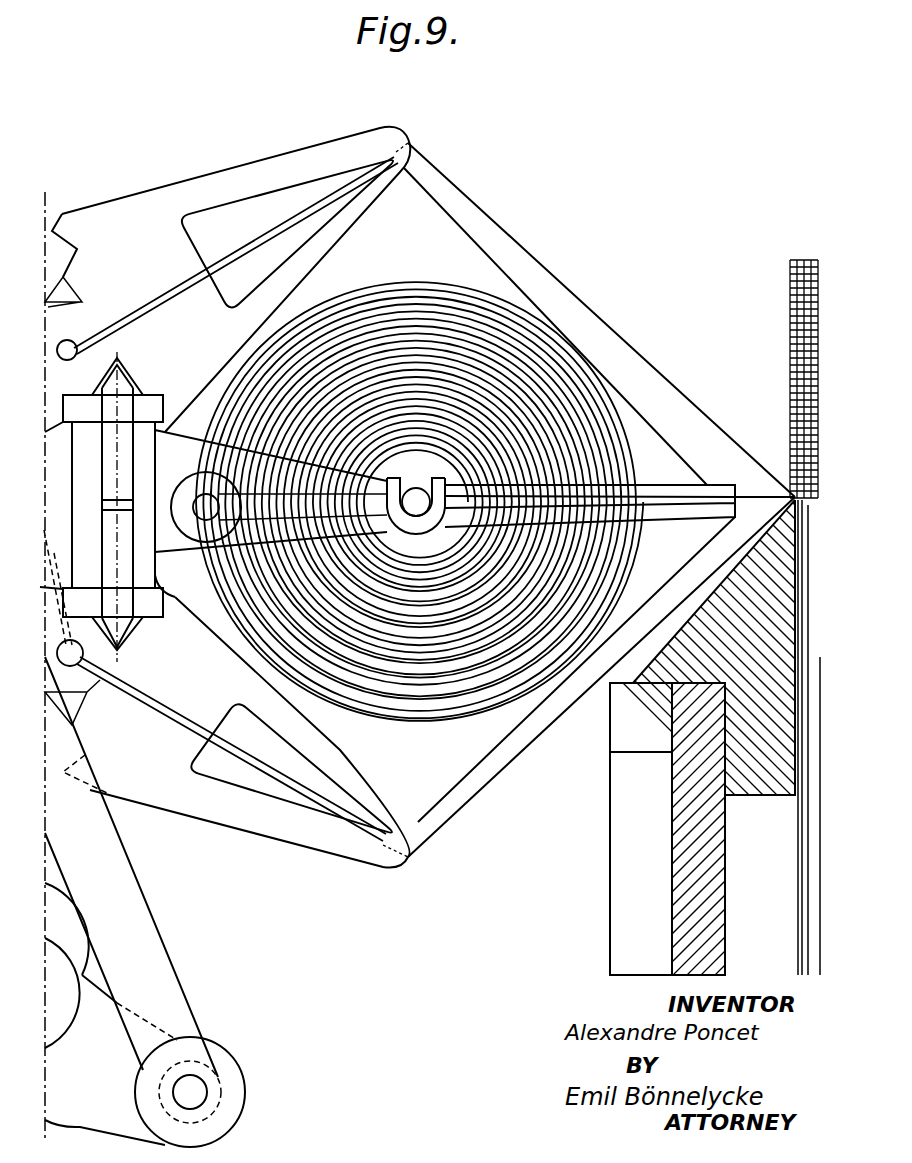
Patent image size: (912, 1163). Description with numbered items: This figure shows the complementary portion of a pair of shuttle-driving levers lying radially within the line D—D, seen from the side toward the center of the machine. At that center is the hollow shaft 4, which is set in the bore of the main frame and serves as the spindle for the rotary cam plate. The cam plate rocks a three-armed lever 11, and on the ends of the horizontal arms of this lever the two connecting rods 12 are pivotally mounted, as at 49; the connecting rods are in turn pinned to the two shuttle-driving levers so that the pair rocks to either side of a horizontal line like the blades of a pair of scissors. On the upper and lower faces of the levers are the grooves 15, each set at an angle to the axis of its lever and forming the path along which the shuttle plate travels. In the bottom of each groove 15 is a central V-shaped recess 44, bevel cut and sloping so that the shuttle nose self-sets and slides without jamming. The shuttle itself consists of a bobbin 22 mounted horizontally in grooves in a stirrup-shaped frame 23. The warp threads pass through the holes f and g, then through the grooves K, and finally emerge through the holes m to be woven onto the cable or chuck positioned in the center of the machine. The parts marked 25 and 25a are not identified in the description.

The line D— D is at (52, 662).
The upper lever arm plate 25 is at (274, 232).
The lower lever arm plate 25a is at (462, 790).
The holes m is at (389, 490).
The bobbin 22 is at (392, 325).
The grooves k K is at (157, 294).
The holes f— g is at (70, 513).
The V-shaped recess 44 is at (99, 500).
The grooves 15 is at (102, 523).
The stirrup-shaped frame 23 is at (475, 513).
The connecting rods 12 is at (60, 292).
The three-armed lever 11 is at (111, 1014).
The pivot 49 is at (190, 1092).
The hollow shaft 4 is at (708, 900).
The holes f—g f is at (52, 584).